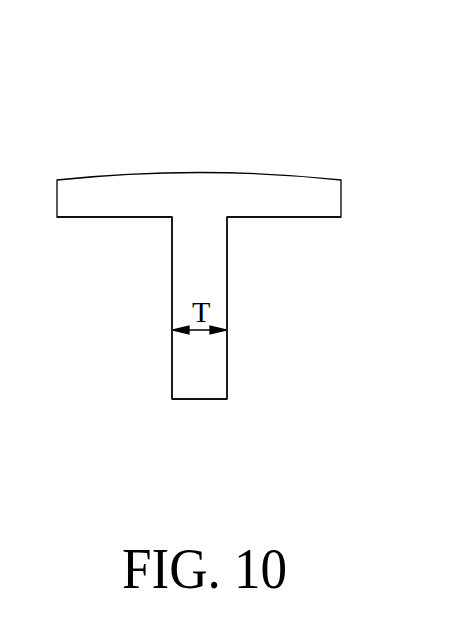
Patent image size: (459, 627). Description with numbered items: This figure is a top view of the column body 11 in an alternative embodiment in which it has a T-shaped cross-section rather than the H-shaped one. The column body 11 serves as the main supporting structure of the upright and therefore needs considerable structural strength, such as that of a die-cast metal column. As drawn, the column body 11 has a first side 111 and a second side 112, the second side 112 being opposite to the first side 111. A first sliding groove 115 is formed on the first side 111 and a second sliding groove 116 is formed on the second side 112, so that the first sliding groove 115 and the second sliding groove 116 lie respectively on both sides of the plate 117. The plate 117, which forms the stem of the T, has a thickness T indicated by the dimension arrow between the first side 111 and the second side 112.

The column body 11 is at (217, 137).
The first side 111 is at (170, 278).
The second side 112 is at (228, 277).
The first sliding groove 115 is at (118, 349).
The second sliding groove 116 is at (290, 357).
The plate 117 is at (197, 399).